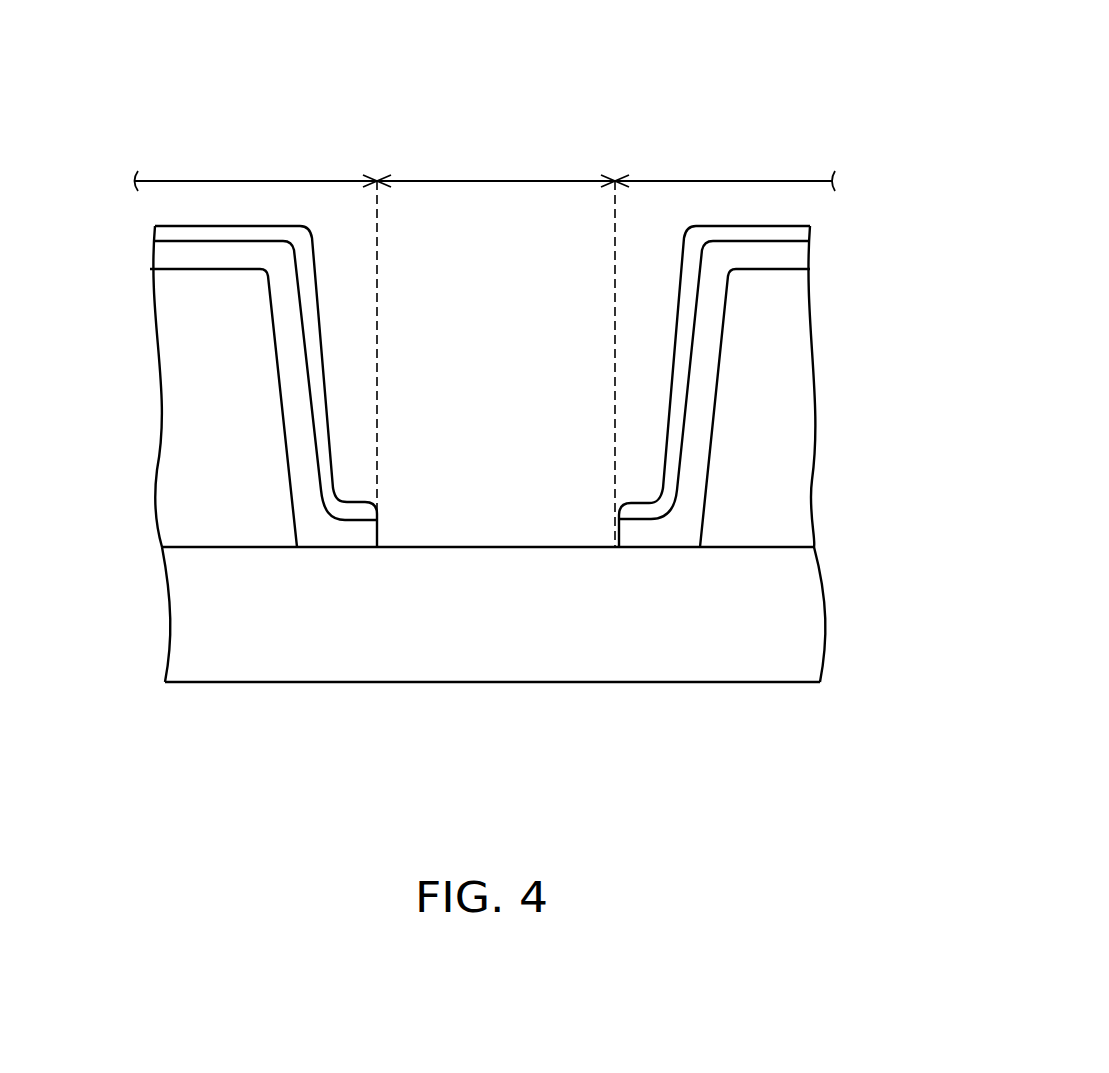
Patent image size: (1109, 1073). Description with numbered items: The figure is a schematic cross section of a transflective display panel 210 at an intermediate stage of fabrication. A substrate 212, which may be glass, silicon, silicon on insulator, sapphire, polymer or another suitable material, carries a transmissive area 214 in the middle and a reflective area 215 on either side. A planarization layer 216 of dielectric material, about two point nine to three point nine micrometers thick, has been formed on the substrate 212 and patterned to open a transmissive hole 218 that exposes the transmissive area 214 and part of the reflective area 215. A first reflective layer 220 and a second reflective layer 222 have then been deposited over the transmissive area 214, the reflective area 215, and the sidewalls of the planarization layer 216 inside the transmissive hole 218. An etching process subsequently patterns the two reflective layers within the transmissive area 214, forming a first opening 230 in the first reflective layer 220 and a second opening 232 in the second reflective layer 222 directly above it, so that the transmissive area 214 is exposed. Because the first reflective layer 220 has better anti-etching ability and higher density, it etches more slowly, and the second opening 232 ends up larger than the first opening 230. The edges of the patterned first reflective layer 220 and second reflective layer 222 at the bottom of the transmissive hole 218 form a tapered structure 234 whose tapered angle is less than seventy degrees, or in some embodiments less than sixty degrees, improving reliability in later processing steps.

The transflective display panel 210 is at (718, 85).
The substrate 212 is at (758, 627).
The transmissive area 214 is at (496, 347).
The reflective area 215 is at (485, 169).
The planarization layer 216 is at (789, 401).
The transmissive hole 218 is at (717, 372).
The first reflective layer 220 is at (156, 255).
The second reflective layer 222 is at (156, 235).
The first opening 230 is at (572, 528).
The second opening 232 is at (605, 503).
The tapered structure 234 is at (378, 520).